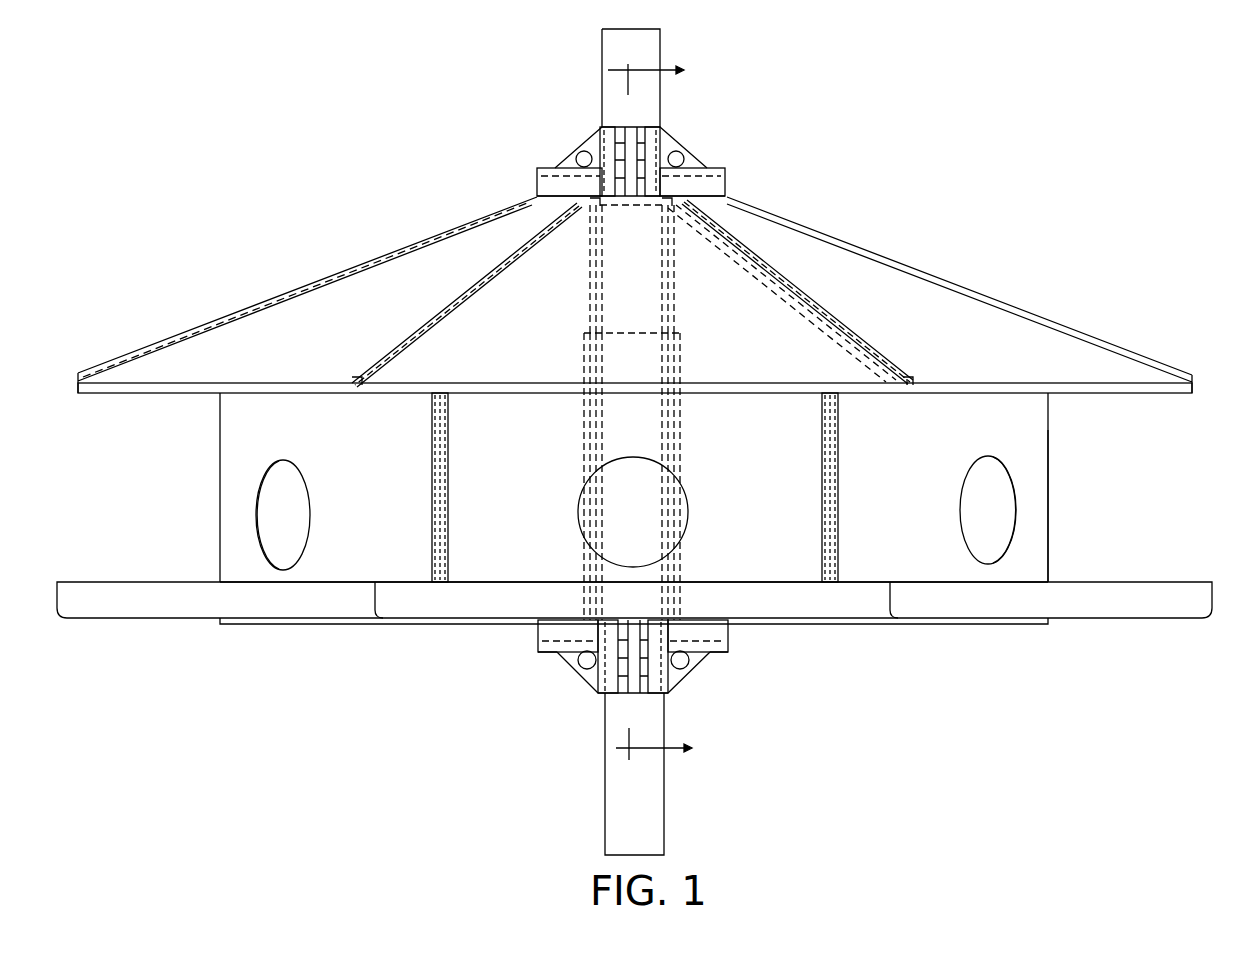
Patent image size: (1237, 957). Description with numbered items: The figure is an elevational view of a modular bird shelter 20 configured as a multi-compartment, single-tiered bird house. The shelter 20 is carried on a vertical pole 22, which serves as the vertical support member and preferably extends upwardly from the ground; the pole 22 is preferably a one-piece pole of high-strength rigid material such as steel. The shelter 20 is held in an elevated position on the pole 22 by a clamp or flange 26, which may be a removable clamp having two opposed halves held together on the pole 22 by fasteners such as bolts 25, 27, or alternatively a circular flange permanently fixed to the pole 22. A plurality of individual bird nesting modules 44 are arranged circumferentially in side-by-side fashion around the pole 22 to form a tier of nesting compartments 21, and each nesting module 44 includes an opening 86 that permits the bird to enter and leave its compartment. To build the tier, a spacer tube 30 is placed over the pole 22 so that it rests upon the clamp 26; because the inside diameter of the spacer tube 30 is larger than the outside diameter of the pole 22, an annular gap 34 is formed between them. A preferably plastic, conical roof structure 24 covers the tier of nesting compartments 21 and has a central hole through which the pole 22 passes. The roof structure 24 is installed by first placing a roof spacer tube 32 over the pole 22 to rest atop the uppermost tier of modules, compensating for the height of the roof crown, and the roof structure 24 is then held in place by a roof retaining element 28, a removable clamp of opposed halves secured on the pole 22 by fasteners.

The modular bird shelter 20 is at (987, 158).
The nesting compartments 21 is at (1050, 433).
The vertical pole 22 is at (664, 787).
The roof structure 24 is at (929, 268).
The bolt 25 is at (590, 664).
The clamp or flange 26 is at (690, 688).
The bolt 27 is at (682, 662).
The roof retaining element 28 is at (672, 130).
The spacer tube 30 is at (680, 562).
The roof spacer tube 32 is at (677, 275).
The annular gap 34 is at (588, 565).
The bird nesting module 44 is at (1050, 543).
The opening 86 is at (1010, 470).